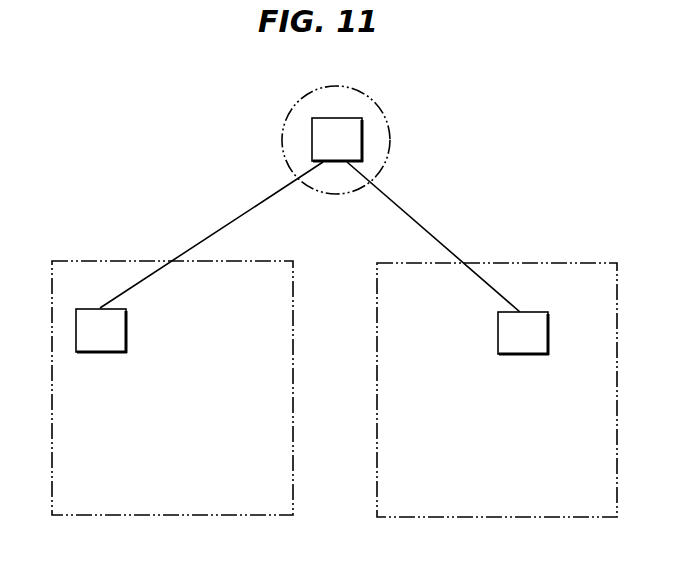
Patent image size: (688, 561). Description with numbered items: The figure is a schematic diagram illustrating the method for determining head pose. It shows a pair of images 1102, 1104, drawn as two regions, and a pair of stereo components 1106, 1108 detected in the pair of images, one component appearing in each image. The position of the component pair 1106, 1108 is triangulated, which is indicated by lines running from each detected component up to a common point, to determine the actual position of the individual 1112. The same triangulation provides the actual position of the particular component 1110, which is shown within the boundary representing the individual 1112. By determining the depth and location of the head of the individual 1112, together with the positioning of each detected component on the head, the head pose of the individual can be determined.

The image 1102 is at (78, 261).
The image 1104 is at (575, 263).
The stereo component 1106 is at (105, 353).
The stereo component 1108 is at (517, 355).
The component 1110 is at (362, 137).
The individual 1112 is at (284, 134).